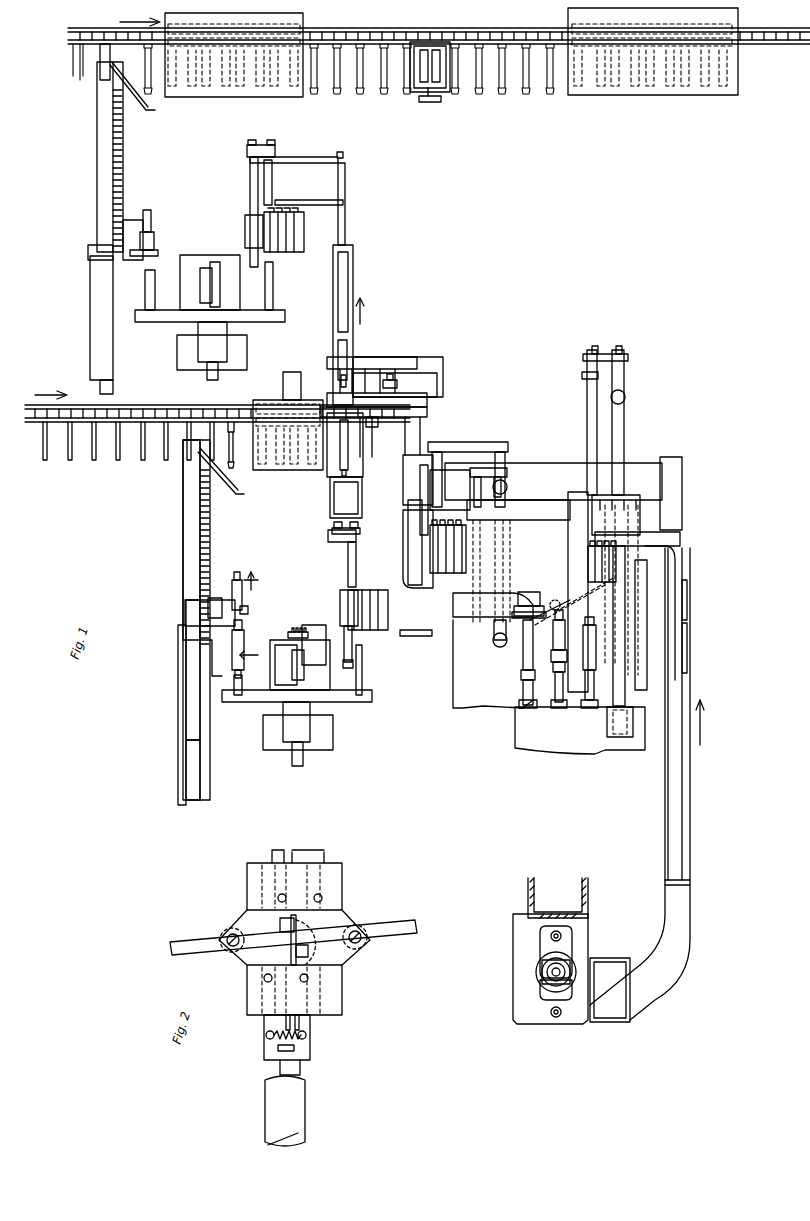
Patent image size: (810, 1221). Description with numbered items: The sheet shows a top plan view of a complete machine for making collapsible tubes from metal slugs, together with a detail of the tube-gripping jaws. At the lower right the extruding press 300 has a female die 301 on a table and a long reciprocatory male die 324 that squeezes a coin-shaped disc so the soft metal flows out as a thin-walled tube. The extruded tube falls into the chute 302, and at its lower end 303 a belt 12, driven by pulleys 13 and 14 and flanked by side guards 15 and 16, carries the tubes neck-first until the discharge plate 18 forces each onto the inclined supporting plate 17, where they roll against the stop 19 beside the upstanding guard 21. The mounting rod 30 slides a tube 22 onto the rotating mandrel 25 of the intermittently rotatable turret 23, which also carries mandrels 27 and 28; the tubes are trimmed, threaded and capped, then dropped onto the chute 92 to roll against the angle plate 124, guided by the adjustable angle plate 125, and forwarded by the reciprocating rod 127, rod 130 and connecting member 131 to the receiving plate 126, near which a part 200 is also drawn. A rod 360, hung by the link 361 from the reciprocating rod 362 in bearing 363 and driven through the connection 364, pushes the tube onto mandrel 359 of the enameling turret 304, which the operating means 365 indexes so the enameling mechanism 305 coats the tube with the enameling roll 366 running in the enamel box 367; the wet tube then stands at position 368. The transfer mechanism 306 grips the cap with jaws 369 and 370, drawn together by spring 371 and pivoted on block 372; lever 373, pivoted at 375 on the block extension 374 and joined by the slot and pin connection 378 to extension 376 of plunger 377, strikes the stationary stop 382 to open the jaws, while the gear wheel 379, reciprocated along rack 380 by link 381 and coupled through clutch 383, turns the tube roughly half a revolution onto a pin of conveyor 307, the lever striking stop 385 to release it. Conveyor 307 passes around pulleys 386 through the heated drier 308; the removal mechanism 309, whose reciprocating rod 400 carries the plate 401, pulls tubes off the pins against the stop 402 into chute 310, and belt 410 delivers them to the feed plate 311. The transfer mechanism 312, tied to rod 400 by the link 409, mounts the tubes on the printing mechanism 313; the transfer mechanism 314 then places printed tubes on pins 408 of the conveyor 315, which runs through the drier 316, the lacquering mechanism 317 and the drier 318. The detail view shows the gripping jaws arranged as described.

In FIG. 1, the belt 12 is at (688, 790).
In FIG. 1, the pulley 13 is at (684, 640).
In FIG. 1, the pulley 14 is at (680, 480).
In FIG. 1, the side guard 15 is at (666, 790).
In FIG. 1, the side guard 16 is at (688, 765).
In FIG. 1, the supporting plate 17 is at (634, 586).
In FIG. 1, the discharge plate 18 is at (684, 560).
In FIG. 1, the stop 19 is at (580, 506).
In FIG. 1, the upstanding guard 21 is at (606, 512).
In FIG. 1, the tube 22 is at (590, 556).
In FIG. 1, the rotatable turret 23 is at (578, 714).
In FIG. 1, the mandrel 25 is at (594, 660).
In FIG. 1, the mandrel 27 is at (522, 636).
In FIG. 1, the mandrel 28 is at (556, 650).
In FIG. 1, the mounting rod 30 is at (590, 424).
In FIG. 1, the chute 92 is at (470, 478).
In FIG. 1, the angle plate 124 is at (412, 508).
In FIG. 1, the adjustable angle plate 125 is at (566, 536).
In FIG. 1, the receiving plate 126 is at (416, 609).
In FIG. 1, the reciprocating rod 127 is at (424, 552).
In FIG. 1, the rod 130 is at (504, 462).
In FIG. 1, the connecting member 131 is at (462, 444).
In FIG. 1, the gripper 200 is at (528, 600).
In FIG. 1, the extruding press 300 is at (512, 956).
In FIG. 1, the female die 301 is at (548, 982).
In FIG. 1, the chute 302 is at (634, 930).
In FIG. 1, the lower end of chute 303 is at (654, 874).
In FIG. 1, the enameling turret 304 is at (350, 700).
In FIG. 1, the enameling mechanism 305 is at (288, 640).
In FIG. 1, the transfer mechanism 306 is at (190, 548).
In FIG. 1, the conveyor 307 is at (146, 405).
In FIG. 1, the drier 308 is at (278, 470).
In FIG. 1, the removal mechanism 309 is at (330, 392).
In FIG. 1, the chute 310 is at (328, 490).
In FIG. 1, the feed plate 311 is at (318, 210).
In FIG. 1, the transfer mechanism 312 is at (250, 200).
In FIG. 1, the printing mechanism 313 is at (172, 312).
In FIG. 1, the transfer mechanism 314 is at (100, 176).
In FIG. 1, the conveyor 315 is at (70, 30).
In FIG. 1, the drier 316 is at (185, 98).
In FIG. 1, the lacquering mechanism 317 is at (420, 98).
In FIG. 1, the drier 318 is at (598, 96).
In FIG. 1, the male die 324 is at (552, 974).
In FIG. 1, the mandrel 359 is at (364, 668).
In FIG. 1, the rod 360 is at (272, 178).
In FIG. 1, the link 361 is at (342, 534).
In FIG. 1, the reciprocating rod 362 is at (250, 164).
In FIG. 1, the bearing 363 is at (340, 604).
In FIG. 1, the connection 364 is at (142, 455).
In FIG. 1, the operating means 365 is at (306, 740).
In FIG. 1, the enameling roll 366 is at (288, 650).
In FIG. 1, the enamel box 367 is at (318, 636).
In FIG. 1, the position 368 is at (247, 673).
In FIG. 1, the jaw 369 is at (234, 572).
In FIG. 2, the jaw 369 is at (264, 1050).
In FIG. 2, the jaw 370 is at (310, 1052).
In FIG. 2, the spring 371 is at (266, 1036).
In FIG. 1, the block 372 is at (254, 573).
In FIG. 2, the block 372 is at (248, 988).
In FIG. 1, the lever 373 is at (246, 610).
In FIG. 2, the lever 373 is at (200, 944).
In FIG. 2, the extension of the block 374 is at (242, 912).
In FIG. 2, the pivot 375 is at (222, 928).
In FIG. 2, the extension of the plunger 376 is at (276, 950).
In FIG. 2, the plunger 377 is at (308, 1025).
In FIG. 2, the slot and pin connection 378 is at (280, 925).
In FIG. 1, the gear wheel 379 is at (198, 600).
In FIG. 1, the rack 380 is at (198, 500).
In FIG. 1, the reciprocating link 381 is at (178, 710).
In FIG. 1, the stationary stop 382 is at (212, 686).
In FIG. 1, the clutch 383 is at (210, 604).
In FIG. 1, the stop 385 is at (246, 498).
In FIG. 1, the pulley 386 is at (272, 400).
In FIG. 1, the reciprocating rod 400 is at (342, 180).
In FIG. 1, the plate 401 is at (348, 448).
In FIG. 1, the stop 402 is at (346, 497).
In FIG. 1, the pin 408 is at (78, 82).
In FIG. 1, the link 409 is at (328, 158).
In FIG. 1, the belt 410 is at (338, 340).